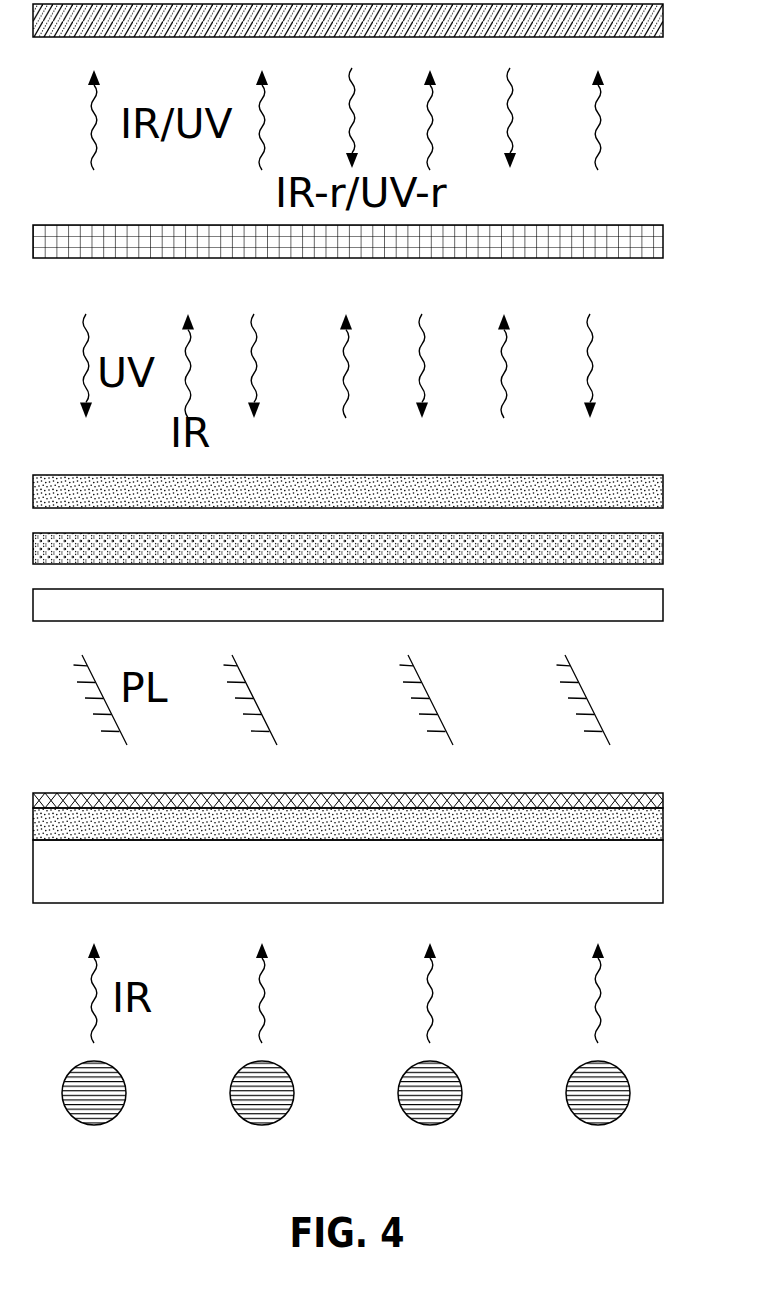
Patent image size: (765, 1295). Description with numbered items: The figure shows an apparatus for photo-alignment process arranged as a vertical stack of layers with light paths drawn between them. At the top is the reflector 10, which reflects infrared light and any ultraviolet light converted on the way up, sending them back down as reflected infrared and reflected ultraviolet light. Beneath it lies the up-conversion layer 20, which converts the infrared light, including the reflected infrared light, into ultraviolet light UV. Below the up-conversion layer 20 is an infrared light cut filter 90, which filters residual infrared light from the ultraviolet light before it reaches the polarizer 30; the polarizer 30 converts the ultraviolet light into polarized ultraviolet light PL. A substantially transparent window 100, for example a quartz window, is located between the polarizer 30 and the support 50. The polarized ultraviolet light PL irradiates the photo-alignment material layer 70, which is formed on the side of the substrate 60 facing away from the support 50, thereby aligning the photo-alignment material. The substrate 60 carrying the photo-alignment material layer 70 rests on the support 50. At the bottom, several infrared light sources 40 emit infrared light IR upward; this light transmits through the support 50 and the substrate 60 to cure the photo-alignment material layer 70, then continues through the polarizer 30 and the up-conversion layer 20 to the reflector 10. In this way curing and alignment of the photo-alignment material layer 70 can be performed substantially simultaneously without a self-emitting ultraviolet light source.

The reflector 10 is at (348, 22).
The up-conversion layer 20 is at (348, 242).
The infrared light cut filter 90 is at (348, 492).
The polarizer 30 is at (348, 548).
The substantially transparent window 100 is at (348, 605).
The photo-alignment material layer 70 is at (343, 795).
The substrate 60 is at (348, 823).
The support 50 is at (348, 871).
The infrared light source 40 is at (346, 1093).